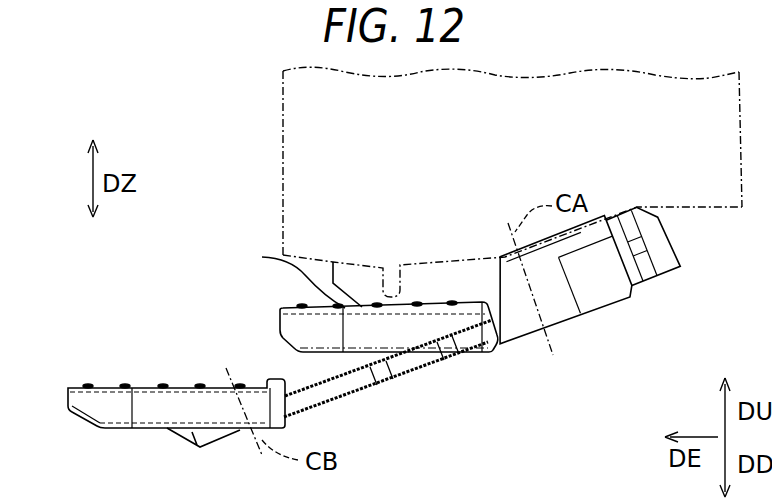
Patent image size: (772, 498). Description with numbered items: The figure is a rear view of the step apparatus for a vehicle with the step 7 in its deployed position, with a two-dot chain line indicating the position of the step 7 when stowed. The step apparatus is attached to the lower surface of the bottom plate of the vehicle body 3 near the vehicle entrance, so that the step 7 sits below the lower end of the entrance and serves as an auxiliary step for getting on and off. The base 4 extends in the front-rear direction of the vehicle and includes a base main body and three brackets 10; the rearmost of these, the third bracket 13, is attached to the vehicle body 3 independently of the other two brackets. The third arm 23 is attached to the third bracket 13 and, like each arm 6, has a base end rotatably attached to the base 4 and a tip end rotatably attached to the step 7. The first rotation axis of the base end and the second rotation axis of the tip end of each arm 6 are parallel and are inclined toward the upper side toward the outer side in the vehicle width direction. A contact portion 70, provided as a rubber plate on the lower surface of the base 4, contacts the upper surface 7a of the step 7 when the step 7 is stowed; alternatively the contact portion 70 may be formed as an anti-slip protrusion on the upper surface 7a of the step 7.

The vehicle body 3 is at (283, 160).
The contact portion 70 is at (297, 274).
The step 7 is at (280, 311).
The upper surface 7a is at (324, 306).
The third arm 23 is at (388, 373).
The arm 6 is at (332, 398).
The base 4 is at (577, 296).
The third bracket 13 is at (577, 296).
The bracket 10 is at (505, 343).